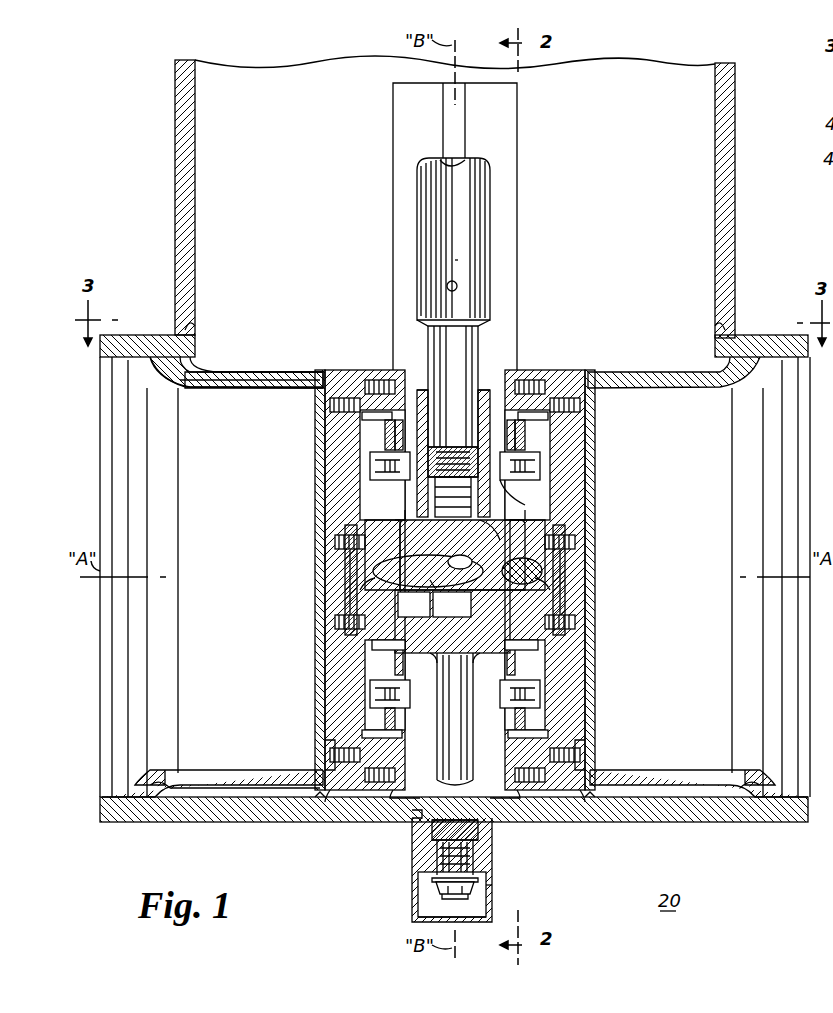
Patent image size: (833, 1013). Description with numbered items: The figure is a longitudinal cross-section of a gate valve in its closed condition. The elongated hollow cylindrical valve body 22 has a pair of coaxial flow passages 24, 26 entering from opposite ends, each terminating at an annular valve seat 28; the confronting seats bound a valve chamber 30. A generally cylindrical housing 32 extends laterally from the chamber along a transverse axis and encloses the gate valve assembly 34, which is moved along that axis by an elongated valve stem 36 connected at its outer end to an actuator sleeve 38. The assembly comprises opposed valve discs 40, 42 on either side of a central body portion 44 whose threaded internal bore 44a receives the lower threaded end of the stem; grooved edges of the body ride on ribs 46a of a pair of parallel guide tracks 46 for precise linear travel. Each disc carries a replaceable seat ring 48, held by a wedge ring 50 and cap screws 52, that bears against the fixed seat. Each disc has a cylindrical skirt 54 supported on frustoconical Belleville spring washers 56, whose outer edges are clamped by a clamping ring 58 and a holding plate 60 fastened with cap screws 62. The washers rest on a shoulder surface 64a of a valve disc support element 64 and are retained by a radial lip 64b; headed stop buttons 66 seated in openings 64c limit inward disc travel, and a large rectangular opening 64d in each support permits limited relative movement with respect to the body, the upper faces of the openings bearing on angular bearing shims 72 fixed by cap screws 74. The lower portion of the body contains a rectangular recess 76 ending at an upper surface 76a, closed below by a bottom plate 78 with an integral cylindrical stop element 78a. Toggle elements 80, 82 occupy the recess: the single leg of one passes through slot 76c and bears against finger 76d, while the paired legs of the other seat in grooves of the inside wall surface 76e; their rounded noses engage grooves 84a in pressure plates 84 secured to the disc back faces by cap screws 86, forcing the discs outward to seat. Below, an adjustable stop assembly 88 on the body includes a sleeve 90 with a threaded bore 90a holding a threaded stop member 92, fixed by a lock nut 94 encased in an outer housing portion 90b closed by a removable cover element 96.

The valve body 22 is at (782, 820).
The flow passage 24 is at (225, 770).
The flow passage 26 is at (727, 785).
The annular valve seat 28 is at (325, 798).
The valve chamber 30 is at (333, 795).
The housing 32 is at (175, 103).
The gate valve assembly 34 is at (544, 276).
The valve stem 36 is at (420, 332).
The actuator sleeve 38 is at (490, 191).
The valve disc 40 is at (321, 645).
The valve disc 42 is at (587, 640).
The central body portion 44 is at (420, 352).
The threaded internal bore 44a is at (360, 489).
The guide track 46 is at (393, 103).
The rib 46a is at (463, 135).
The seat ring 48 is at (338, 370).
The wedge ring 50 is at (330, 738).
The cap screw 52 is at (330, 407).
The skirt 54 is at (330, 795).
The Belleville spring washer 56 is at (385, 439).
The clamping ring 58 is at (362, 418).
The holding plate 60 is at (400, 800).
The cap screw 62 is at (383, 380).
The valve disc support element 64 is at (370, 678).
The shoulder surface 64a is at (375, 732).
The radial lip 64b is at (385, 710).
The opening 64c is at (370, 466).
The rectangular opening 64d is at (370, 645).
The stop button 66 is at (392, 451).
The bearing shim 72 is at (542, 502).
The cap screw 74 is at (400, 521).
The recess 76 is at (365, 553).
The upper surface 76a is at (497, 550).
The slot 76c is at (360, 590).
The finger 76d is at (550, 590).
The inside wall surface 76e is at (430, 582).
The bottom plate 78 is at (435, 623).
The stop element 78a is at (473, 690).
The toggle element 80 is at (372, 573).
The toggle element 82 is at (542, 573).
The pressure plate 84 is at (340, 605).
The groove 84a is at (350, 545).
The cap screw 86 is at (337, 541).
The adjustable stop assembly 88 is at (406, 885).
The sleeve 90 is at (492, 860).
The threaded internal bore 90a is at (423, 820).
The outer housing portion 90b is at (488, 893).
The stop member 92 is at (478, 825).
The lock nut 94 is at (460, 895).
The cover element 96 is at (413, 922).